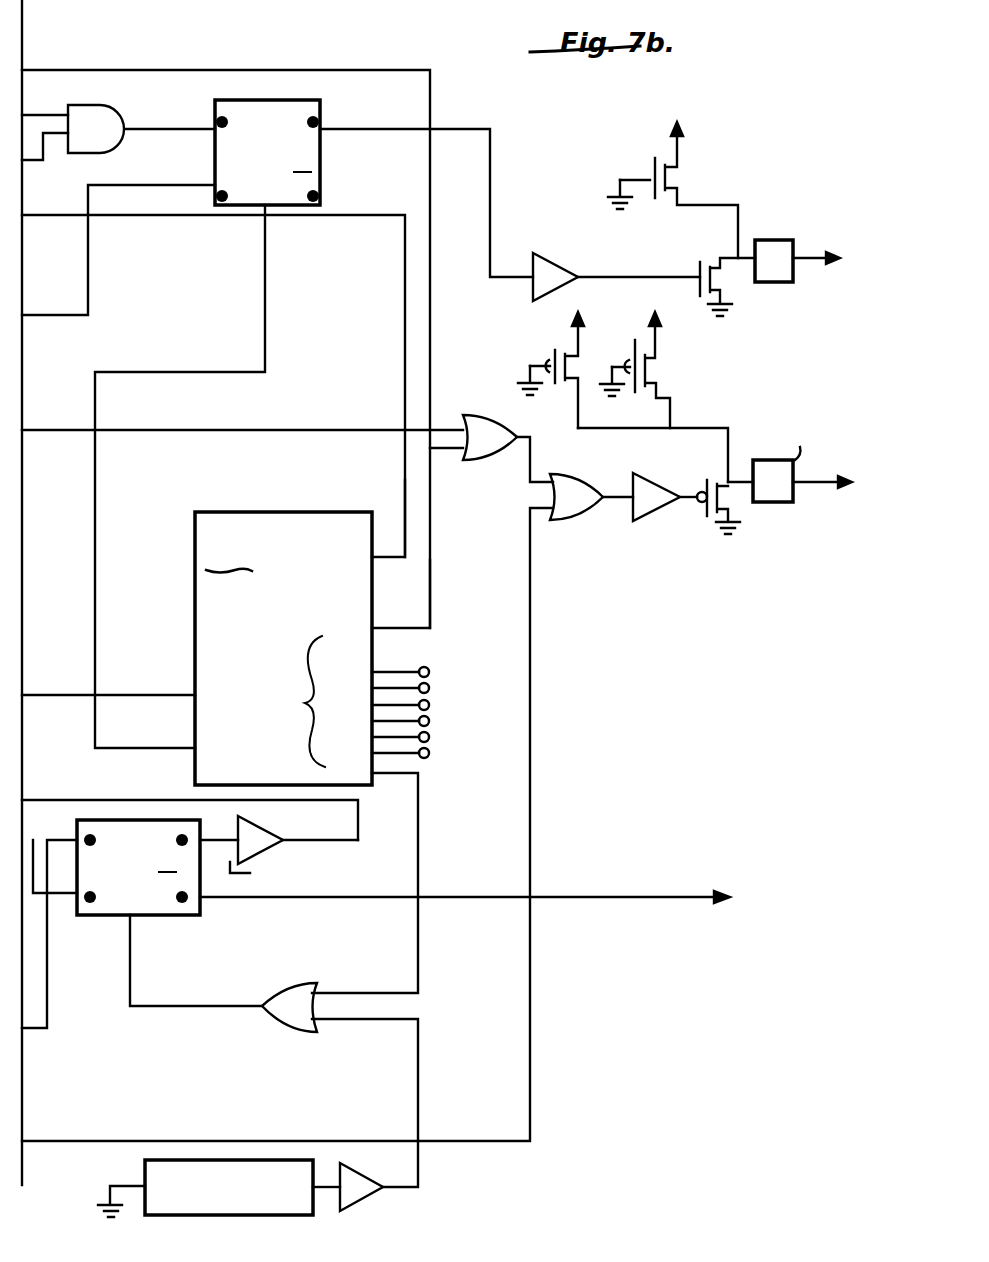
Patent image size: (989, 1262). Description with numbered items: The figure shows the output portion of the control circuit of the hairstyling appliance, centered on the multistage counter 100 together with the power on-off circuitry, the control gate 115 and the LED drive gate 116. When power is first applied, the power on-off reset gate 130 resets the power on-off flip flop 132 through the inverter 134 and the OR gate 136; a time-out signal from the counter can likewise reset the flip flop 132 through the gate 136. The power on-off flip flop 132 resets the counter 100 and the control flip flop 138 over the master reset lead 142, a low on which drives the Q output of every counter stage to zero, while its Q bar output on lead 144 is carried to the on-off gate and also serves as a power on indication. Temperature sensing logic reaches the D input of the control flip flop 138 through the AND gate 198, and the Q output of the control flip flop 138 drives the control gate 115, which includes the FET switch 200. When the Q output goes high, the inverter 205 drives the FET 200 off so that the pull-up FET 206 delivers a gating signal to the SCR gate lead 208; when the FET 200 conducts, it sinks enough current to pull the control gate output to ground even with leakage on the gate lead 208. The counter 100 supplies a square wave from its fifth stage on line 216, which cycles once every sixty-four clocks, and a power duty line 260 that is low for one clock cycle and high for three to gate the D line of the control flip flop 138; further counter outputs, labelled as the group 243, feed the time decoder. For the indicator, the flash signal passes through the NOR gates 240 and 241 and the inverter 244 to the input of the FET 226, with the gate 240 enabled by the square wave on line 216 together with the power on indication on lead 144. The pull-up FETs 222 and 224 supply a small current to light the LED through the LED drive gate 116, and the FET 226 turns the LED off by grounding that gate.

The multistage counter 100 is at (283, 648).
The control gate 115 is at (740, 190).
The LED drive gate 116 is at (786, 514).
The power on-off reset gate 130 is at (143, 1176).
The power on-off flip flop 132 is at (152, 818).
The inverter 134 is at (378, 1182).
The OR gate 136 is at (310, 1034).
The control flip flop 138 is at (333, 104).
The master reset lead 142 is at (352, 822).
The lead 144 is at (392, 890).
The AND gate 198 is at (126, 108).
The FET switch 200 is at (696, 273).
The inverter 205 is at (531, 285).
The pull-up FET 206 is at (645, 178).
The gate lead 208 is at (812, 265).
The lead 216 is at (458, 598).
The pull-up FET 222 is at (548, 362).
The pull-up FET 224 is at (638, 400).
The FET 226 is at (711, 518).
The NOR gate 240 is at (501, 458).
The NOR gate 241 is at (592, 512).
The counter outputs Q10-Q15 243 is at (339, 701).
The inverter 244 is at (657, 512).
The power duty line 260 is at (404, 510).